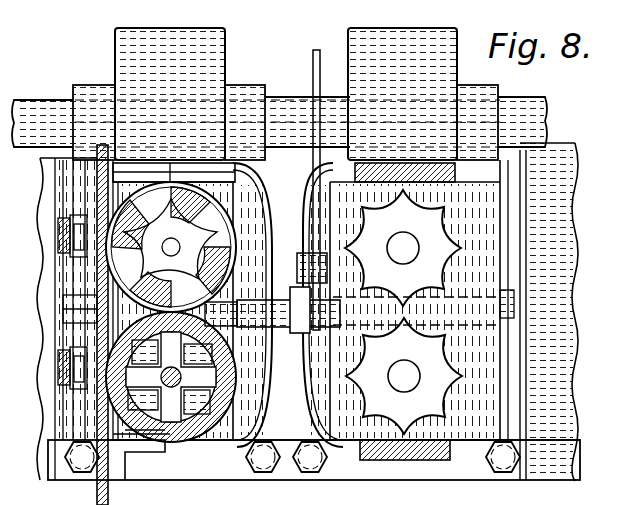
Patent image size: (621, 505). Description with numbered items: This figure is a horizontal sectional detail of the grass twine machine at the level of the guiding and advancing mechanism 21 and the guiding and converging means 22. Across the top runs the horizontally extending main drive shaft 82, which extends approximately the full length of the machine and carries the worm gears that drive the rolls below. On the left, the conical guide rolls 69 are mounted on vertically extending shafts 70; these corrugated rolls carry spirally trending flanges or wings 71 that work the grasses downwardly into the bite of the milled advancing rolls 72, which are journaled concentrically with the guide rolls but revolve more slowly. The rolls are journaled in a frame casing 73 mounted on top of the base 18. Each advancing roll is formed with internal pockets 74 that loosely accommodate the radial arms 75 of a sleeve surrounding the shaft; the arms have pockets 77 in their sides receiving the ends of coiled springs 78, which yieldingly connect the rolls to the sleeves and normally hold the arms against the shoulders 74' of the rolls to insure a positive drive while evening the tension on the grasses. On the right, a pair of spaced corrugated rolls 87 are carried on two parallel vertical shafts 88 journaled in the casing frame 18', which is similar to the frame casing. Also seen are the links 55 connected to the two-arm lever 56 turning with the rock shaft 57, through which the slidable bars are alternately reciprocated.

The base 18 is at (588, 312).
The casing frame 18' is at (405, 472).
The guiding and advancing mechanism 21 is at (100, 186).
The guiding and converging means 22 is at (457, 285).
The links 55 is at (60, 228).
The two-arm lever 56 is at (62, 250).
The rock shaft 57 is at (423, 307).
The conical guide rolls 69 is at (140, 258).
The shafts 70 is at (248, 390).
The spirally trending flanges or wings 71 is at (112, 302).
The milled advancing rolls 72 is at (120, 433).
The frame casing 73 is at (165, 462).
The internal pockets 74 is at (261, 378).
The shoulders 74' is at (121, 389).
The radial arms 75 is at (112, 344).
The pockets 77 is at (178, 172).
The coiled springs 78 is at (150, 402).
The main drive shaft 82 is at (60, 102).
The corrugated rolls 87 is at (433, 227).
The shafts 88 is at (410, 258).